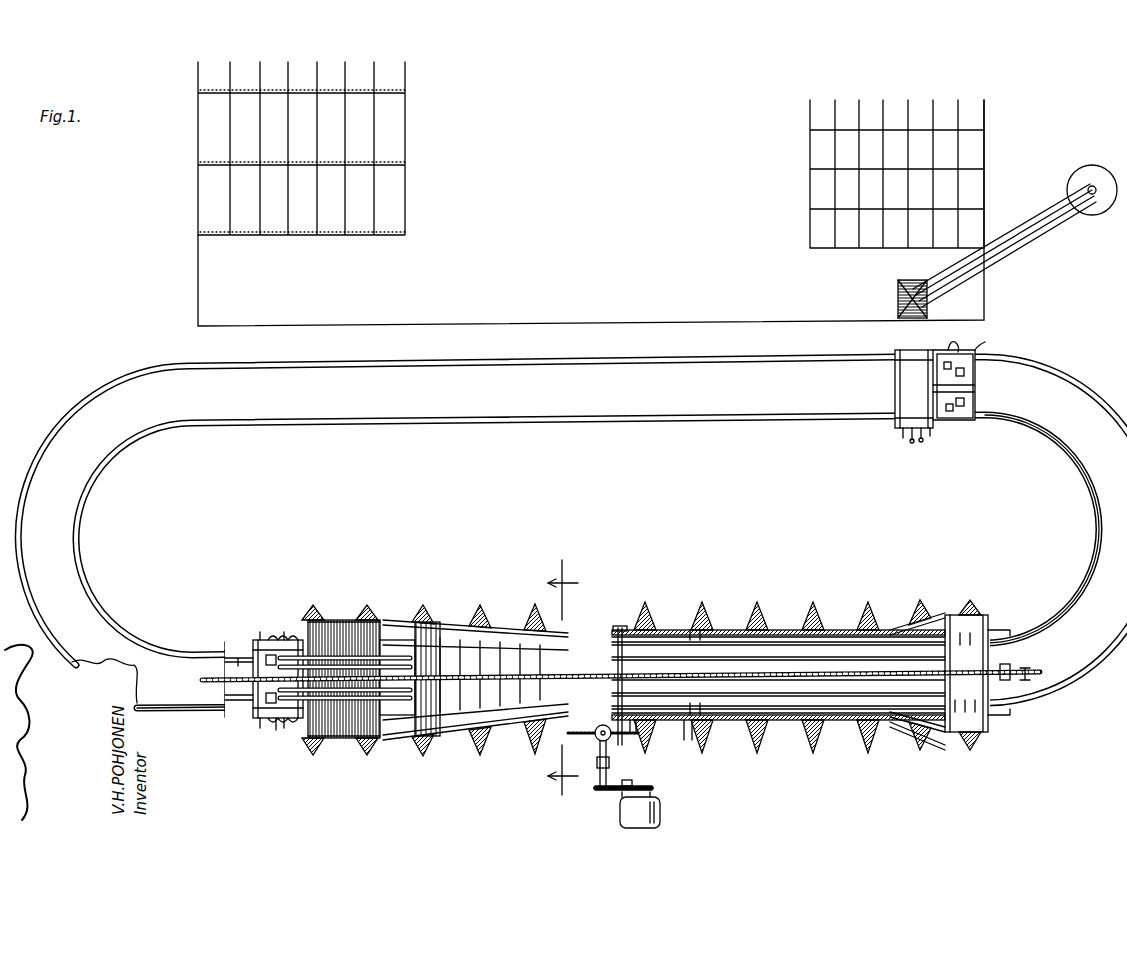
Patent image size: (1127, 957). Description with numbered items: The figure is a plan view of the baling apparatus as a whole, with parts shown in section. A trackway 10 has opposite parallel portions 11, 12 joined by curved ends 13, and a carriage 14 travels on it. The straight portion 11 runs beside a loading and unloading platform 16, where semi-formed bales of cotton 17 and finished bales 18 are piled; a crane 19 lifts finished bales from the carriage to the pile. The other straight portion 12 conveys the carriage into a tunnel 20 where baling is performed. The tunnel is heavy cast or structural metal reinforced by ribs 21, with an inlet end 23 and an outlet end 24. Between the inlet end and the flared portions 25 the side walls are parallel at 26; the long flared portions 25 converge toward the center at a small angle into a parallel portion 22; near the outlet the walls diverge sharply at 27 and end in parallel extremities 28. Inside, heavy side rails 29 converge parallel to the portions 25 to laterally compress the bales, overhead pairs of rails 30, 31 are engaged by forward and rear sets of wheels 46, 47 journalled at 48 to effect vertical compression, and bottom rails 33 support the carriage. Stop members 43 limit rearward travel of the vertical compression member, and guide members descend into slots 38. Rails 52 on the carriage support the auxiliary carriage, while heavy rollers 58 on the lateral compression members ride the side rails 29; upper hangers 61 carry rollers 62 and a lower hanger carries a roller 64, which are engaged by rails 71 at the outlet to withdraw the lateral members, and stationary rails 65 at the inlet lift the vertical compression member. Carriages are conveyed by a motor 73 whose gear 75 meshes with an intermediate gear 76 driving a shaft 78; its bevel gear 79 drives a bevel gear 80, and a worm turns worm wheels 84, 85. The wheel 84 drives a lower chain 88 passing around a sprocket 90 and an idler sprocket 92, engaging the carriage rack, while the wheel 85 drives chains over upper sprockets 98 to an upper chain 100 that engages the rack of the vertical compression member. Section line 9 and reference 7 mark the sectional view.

The bearing block 7 is at (269, 672).
The section line 9 is at (563, 686).
The trackway 10 is at (172, 362).
The straight portion of the trackway 11 is at (575, 356).
The straight portion of the trackway 12 is at (215, 712).
The curved ends 13 is at (1097, 516).
The carriage 14 is at (893, 378).
The loading and unloading platform 16 is at (198, 286).
The semi-formed bales 17 is at (297, 236).
The finished bales 18 is at (815, 217).
The crane 19 is at (1035, 235).
The tunnel 20 is at (795, 624).
The ribs 21 is at (694, 640).
The parallel portion of the tunnel 22 is at (735, 630).
The inlet end 23 is at (296, 640).
The outlet end 24 is at (986, 620).
The flared portions of the side walls 25 is at (465, 622).
The parallel side wall portions 26 is at (345, 620).
The diverging side wall portions 27 is at (890, 628).
The parallel extremities of the side walls 28 is at (958, 615).
The side rails 29 is at (512, 630).
The overhead rails 30 is at (345, 678).
The overhead rails 31 is at (300, 650).
The bottom rails 33 is at (832, 660).
The slots 38 is at (897, 393).
The stop members 43 is at (975, 376).
The forward set of wheels 46 is at (964, 370).
The rear set of wheels 47 is at (944, 362).
The journals 48 is at (225, 662).
The rails 52 is at (355, 740).
The heavy rollers 58 is at (268, 640).
The upper hangers 61 is at (688, 721).
The rollers 62 is at (968, 348).
The roller 64 is at (960, 352).
The stationary rails 65 is at (258, 642).
The rails 71 is at (920, 625).
The motor 73 is at (662, 811).
The gear 75 is at (652, 790).
The intermediate gear 76 is at (640, 772).
The shaft 78 is at (598, 792).
The bevel gear 79 is at (614, 763).
The bevel gear 80 is at (604, 740).
The worm wheel 84 is at (597, 742).
The worm wheel 85 is at (640, 734).
The lower chain 88 is at (778, 668).
The sprocket 90 is at (1027, 670).
The idler sprocket 92 is at (1011, 662).
The upper sprockets 98 is at (621, 628).
The upper chain 100 is at (202, 680).